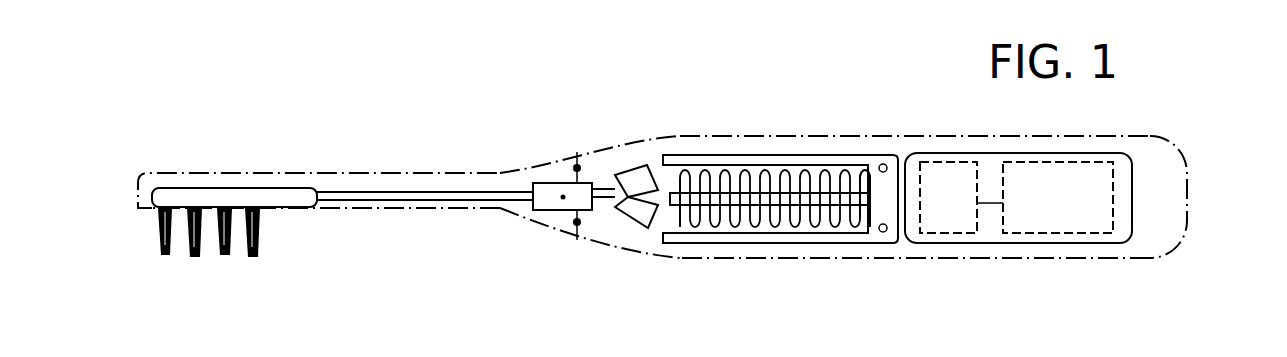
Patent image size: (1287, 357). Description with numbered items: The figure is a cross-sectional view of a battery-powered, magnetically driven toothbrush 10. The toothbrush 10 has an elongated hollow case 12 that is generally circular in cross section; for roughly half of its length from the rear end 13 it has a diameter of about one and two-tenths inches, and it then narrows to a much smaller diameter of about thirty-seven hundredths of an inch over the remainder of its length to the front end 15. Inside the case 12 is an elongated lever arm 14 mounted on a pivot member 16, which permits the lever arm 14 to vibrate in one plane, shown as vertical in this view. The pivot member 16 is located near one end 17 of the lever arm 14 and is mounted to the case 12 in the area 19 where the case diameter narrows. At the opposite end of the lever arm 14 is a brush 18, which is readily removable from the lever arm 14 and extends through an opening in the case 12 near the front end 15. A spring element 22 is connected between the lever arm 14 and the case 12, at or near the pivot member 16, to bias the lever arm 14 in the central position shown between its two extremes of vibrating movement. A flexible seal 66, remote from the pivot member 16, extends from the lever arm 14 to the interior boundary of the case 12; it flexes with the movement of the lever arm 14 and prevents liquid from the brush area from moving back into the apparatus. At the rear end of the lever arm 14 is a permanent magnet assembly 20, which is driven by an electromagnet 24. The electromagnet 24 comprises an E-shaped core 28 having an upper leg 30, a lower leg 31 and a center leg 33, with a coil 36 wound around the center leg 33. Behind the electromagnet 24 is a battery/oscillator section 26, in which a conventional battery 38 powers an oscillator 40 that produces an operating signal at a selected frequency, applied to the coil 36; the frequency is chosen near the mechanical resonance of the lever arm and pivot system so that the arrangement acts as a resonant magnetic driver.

The toothbrush 10 is at (788, 107).
The elongated hollow case 12 is at (871, 138).
The rear end 13 is at (1188, 230).
The lever arm 14 is at (452, 200).
The front end 15 is at (141, 184).
The pivot member 16 is at (553, 183).
The end of the lever arm 17 is at (607, 200).
The brush 18 is at (257, 235).
The area where the case narrows 19 is at (528, 162).
The permanent magnet assembly 20 is at (646, 165).
The spring element 22 is at (580, 168).
The electromagnet 24 is at (808, 152).
The battery/oscillator section 26 is at (1052, 243).
The E-shaped core 28 is at (875, 243).
The upper leg 30 is at (710, 156).
The lower leg 31 is at (737, 238).
The center leg 33 is at (685, 203).
The coil 36 is at (837, 220).
The battery 38 is at (1068, 162).
The oscillator 40 is at (965, 162).
The seal 66 is at (343, 192).